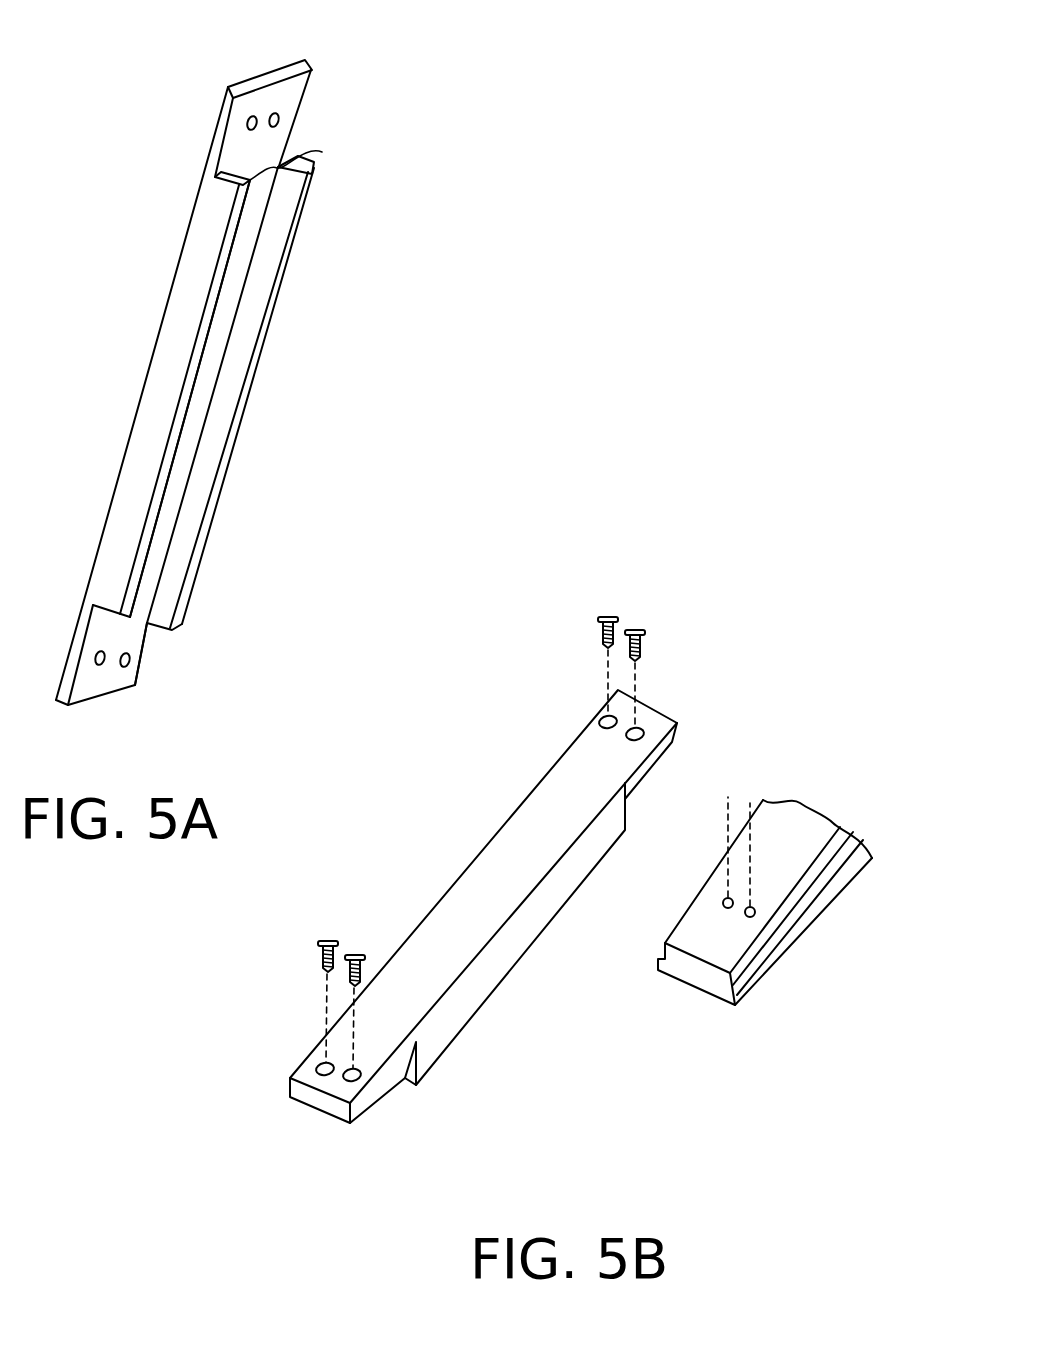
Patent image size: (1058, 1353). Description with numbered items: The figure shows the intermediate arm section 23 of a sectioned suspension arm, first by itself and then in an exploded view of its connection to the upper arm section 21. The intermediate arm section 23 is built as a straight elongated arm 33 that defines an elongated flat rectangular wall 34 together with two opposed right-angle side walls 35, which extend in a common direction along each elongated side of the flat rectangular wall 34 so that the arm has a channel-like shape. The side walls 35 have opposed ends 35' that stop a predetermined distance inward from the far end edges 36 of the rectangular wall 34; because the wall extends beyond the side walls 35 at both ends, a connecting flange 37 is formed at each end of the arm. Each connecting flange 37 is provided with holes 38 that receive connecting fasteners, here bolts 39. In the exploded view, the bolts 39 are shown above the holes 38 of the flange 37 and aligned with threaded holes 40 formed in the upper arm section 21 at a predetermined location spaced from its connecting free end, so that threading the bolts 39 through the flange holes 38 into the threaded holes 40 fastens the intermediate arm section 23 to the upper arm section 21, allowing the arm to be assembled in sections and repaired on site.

In FIG. 5B, the upper arm section 21 is at (797, 802).
In FIG. 5A, the intermediate arm section 23 is at (254, 386).
In FIG. 5A, the straight elongated arm 33 is at (193, 428).
In FIG. 5B, the elongated flat rectangular wall 34 is at (478, 868).
In FIG. 5A, the side walls 35 is at (177, 394).
In FIG. 5B, the side walls 35 is at (515, 934).
In FIG. 5A, the opposed ends of the side walls 35' is at (250, 385).
In FIG. 5A, the far end edges 36 is at (284, 72).
In FIG. 5A, the connecting flange 37 is at (258, 108).
In FIG. 5A, the holes 38 is at (247, 137).
In FIG. 5B, the holes 38 is at (615, 717).
In FIG. 5B, the bolts 39 is at (637, 629).
In FIG. 5B, the threaded holes 40 is at (734, 905).